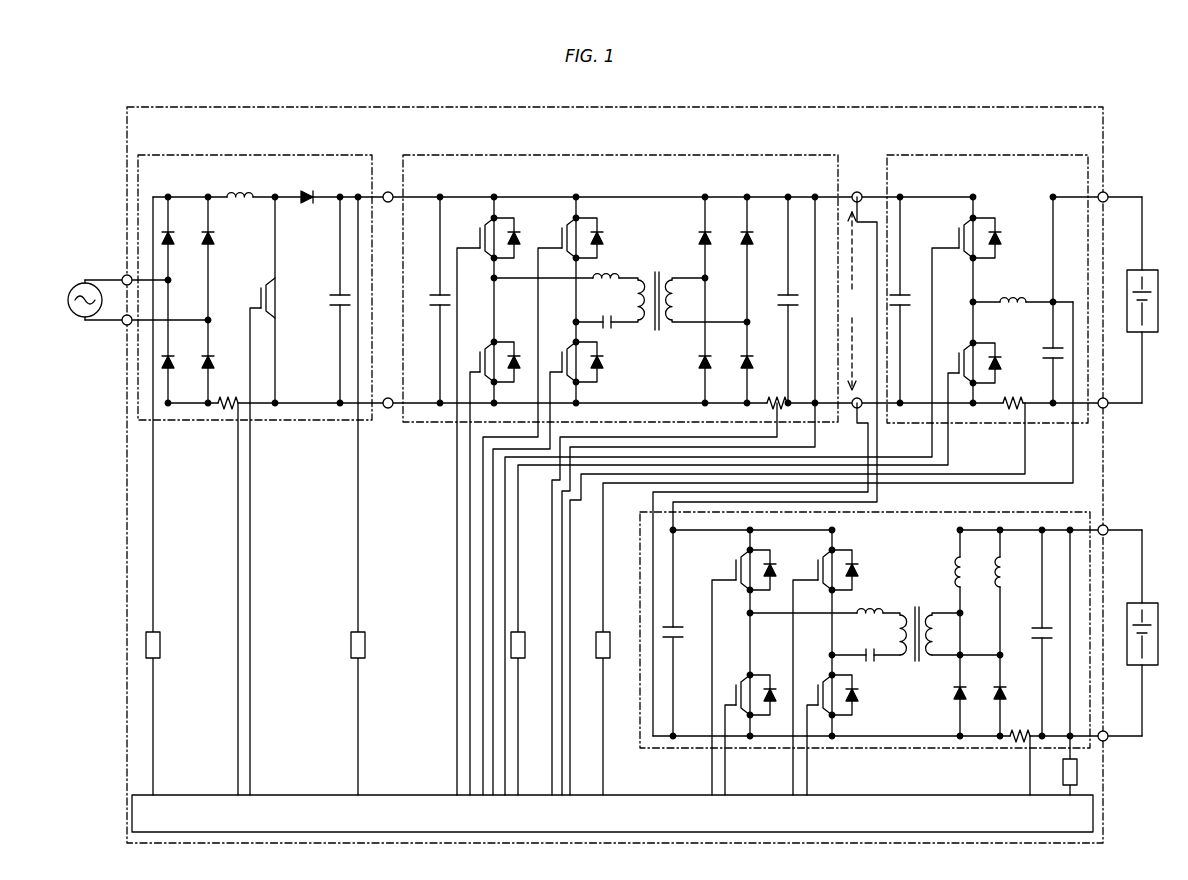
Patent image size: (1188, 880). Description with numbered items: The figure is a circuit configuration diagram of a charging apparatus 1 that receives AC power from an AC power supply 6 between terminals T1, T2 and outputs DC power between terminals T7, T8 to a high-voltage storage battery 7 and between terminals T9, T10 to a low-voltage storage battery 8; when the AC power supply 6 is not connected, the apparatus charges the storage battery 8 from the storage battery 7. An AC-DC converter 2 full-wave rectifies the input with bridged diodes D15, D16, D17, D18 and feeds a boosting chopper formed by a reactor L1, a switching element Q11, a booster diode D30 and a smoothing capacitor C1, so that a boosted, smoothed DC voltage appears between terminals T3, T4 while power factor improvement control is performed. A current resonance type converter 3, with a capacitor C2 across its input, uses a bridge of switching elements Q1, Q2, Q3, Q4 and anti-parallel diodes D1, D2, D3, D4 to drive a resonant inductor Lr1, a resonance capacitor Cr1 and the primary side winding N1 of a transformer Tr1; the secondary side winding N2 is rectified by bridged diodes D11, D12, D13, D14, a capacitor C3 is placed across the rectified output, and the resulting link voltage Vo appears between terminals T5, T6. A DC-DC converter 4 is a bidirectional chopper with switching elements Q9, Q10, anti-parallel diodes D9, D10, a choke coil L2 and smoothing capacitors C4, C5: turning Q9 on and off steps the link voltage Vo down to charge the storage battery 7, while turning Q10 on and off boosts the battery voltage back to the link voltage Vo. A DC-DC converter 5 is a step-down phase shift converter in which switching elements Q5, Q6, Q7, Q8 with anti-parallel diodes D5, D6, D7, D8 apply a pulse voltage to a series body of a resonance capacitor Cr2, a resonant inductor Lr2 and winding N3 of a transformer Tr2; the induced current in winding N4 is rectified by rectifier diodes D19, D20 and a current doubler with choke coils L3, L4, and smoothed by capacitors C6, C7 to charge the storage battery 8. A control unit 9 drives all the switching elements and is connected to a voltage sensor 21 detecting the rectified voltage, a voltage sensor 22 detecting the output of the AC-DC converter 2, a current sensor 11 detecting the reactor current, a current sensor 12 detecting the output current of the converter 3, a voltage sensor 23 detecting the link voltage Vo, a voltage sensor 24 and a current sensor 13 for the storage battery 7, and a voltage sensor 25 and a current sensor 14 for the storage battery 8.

The power supply device 1 is at (124, 108).
The rectifier / PFC converter circuit 2 is at (158, 155).
The first DC-DC converter (full bridge) 3 is at (416, 155).
The step-down converter 4 is at (905, 155).
The second DC-DC converter 5 is at (640, 766).
The AC power source 6 is at (80, 284).
The first load (battery) 7 is at (1156, 270).
The second load (battery) 8 is at (1158, 602).
The control unit 9 is at (194, 794).
The current detector 11 is at (230, 396).
The current detector 12 is at (762, 396).
The current detector 13 is at (1004, 421).
The current detector 14 is at (1014, 722).
The voltage detector 21 is at (160, 630).
The voltage detector 22 is at (365, 630).
The voltage detector 23 is at (524, 630).
The voltage detector 24 is at (607, 630).
The voltage detector 25 is at (1062, 771).
The input terminal T1 is at (123, 274).
The input terminal T2 is at (124, 326).
The terminal T3 is at (390, 192).
The terminal T4 is at (388, 410).
The terminal T5 is at (858, 192).
The terminal T6 is at (855, 410).
The output terminal T7 is at (1108, 191).
The output terminal T8 is at (1108, 409).
The output terminal T9 is at (1108, 524).
The output terminal T10 is at (1108, 742).
The inductor L1 is at (222, 188).
The inductor L2 is at (1010, 296).
The inductor L3 is at (948, 574).
The inductor L4 is at (986, 574).
The resonant inductor Lr1 is at (612, 274).
The resonant inductor Lr2 is at (874, 608).
The resonant capacitor Cr1 is at (606, 333).
The resonant capacitor Cr2 is at (876, 666).
The transformer Tr1 is at (651, 317).
The transformer Tr2 is at (907, 652).
The primary winding N1 is at (634, 308).
The secondary winding N2 is at (674, 300).
The primary winding N3 is at (892, 644).
The secondary winding N4 is at (918, 678).
The capacitor C1 is at (336, 286).
The capacitor C2 is at (438, 286).
The capacitor C3 is at (786, 286).
The capacitor C4 is at (910, 286).
The capacitor C5 is at (1040, 362).
The capacitor C6 is at (680, 612).
The capacitor C7 is at (1036, 634).
The switching element Q1 is at (474, 236).
The switching element Q2 is at (474, 348).
The switching element Q3 is at (566, 236).
The switching element Q4 is at (566, 348).
The switching element Q5 is at (728, 572).
The switching element Q6 is at (738, 694).
The switching element Q7 is at (822, 572).
The switching element Q8 is at (820, 694).
The switching element Q9 is at (950, 236).
The switching element Q10 is at (964, 348).
The switching element Q11 is at (264, 282).
The diode D1 is at (515, 228).
The diode D2 is at (515, 349).
The diode D3 is at (604, 232).
The diode D4 is at (604, 378).
The diode D5 is at (772, 563).
The diode D6 is at (770, 688).
The diode D7 is at (856, 566).
The diode D8 is at (856, 712).
The diode D9 is at (1002, 232).
The diode D10 is at (1002, 342).
The rectifier diode D11 is at (700, 234).
The rectifier diode D12 is at (700, 366).
The rectifier diode D13 is at (742, 234).
The rectifier diode D14 is at (742, 366).
The rectifier diode D15 is at (183, 238).
The rectifier diode D16 is at (185, 341).
The rectifier diode D17 is at (223, 258).
The rectifier diode D18 is at (223, 361).
The rectifier diode D19 is at (952, 700).
The rectifier diode D20 is at (994, 700).
The diode D30 is at (310, 205).
The output voltage Vo is at (848, 301).